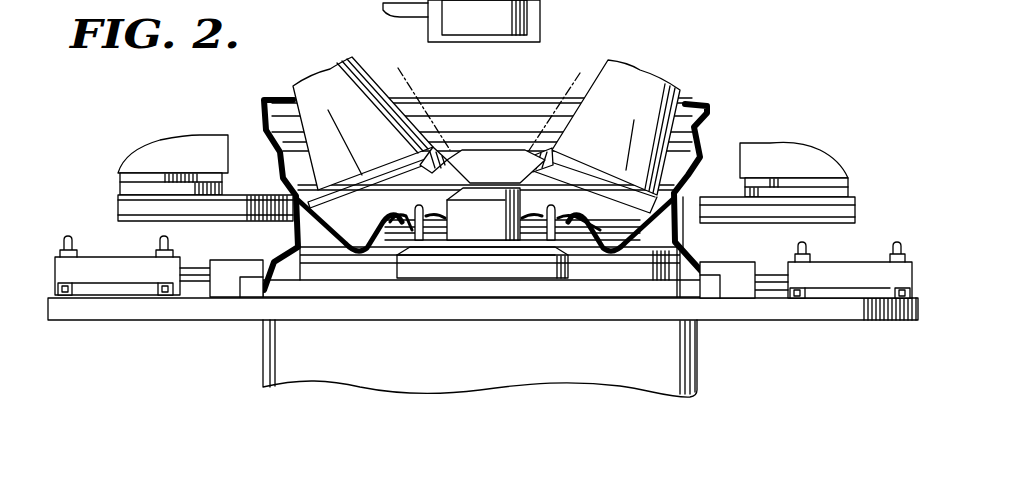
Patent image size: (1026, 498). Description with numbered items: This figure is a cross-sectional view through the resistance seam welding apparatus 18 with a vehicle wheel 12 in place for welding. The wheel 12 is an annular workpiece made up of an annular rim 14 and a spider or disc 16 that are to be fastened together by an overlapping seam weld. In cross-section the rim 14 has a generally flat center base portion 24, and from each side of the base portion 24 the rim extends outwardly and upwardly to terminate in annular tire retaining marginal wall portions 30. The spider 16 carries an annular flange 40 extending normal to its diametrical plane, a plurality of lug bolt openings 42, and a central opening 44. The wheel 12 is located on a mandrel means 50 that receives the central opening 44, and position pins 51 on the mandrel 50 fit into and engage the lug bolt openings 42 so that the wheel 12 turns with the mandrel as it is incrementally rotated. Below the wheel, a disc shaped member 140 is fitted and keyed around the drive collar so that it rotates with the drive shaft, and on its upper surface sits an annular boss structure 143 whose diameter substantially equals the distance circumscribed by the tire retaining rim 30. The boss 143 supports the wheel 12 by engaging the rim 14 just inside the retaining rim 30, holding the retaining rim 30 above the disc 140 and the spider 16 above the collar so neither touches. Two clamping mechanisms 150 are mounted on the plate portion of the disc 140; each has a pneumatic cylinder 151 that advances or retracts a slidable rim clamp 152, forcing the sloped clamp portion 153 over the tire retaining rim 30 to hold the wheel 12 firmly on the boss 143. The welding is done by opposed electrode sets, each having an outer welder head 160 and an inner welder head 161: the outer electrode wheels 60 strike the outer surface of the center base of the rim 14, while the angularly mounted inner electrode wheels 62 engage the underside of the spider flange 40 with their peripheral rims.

The vehicle wheel 12 is at (570, 88).
The annular rim 14 is at (716, 123).
The spider or disc 16 is at (368, 245).
The resistance seam welding apparatus 18 is at (203, 386).
The center base portion 24 is at (690, 195).
The tire retaining marginal wall portions 30 is at (707, 122).
The annular flange 40 is at (290, 236).
The lug bolt openings 42 is at (550, 222).
The central opening 44 is at (457, 223).
The mandrel means 50 is at (480, 195).
The position pins 51 is at (418, 207).
The outer electrode wheels 60 is at (130, 207).
The inner electrode wheels 62 is at (523, 150).
The disc shaped member 140 is at (450, 385).
The annular boss structure 143 is at (385, 290).
The clamping mechanisms 150 is at (482, 282).
The pneumatic cylinder 151 is at (833, 287).
The slidable rim clamp 152 is at (224, 261).
The sloped clamp portion 153 is at (248, 280).
The outer welder head 160 is at (120, 153).
The inner welder head 161 is at (552, 84).